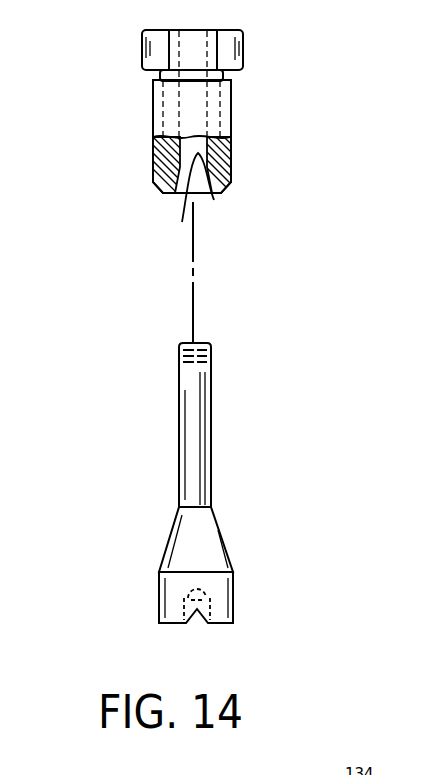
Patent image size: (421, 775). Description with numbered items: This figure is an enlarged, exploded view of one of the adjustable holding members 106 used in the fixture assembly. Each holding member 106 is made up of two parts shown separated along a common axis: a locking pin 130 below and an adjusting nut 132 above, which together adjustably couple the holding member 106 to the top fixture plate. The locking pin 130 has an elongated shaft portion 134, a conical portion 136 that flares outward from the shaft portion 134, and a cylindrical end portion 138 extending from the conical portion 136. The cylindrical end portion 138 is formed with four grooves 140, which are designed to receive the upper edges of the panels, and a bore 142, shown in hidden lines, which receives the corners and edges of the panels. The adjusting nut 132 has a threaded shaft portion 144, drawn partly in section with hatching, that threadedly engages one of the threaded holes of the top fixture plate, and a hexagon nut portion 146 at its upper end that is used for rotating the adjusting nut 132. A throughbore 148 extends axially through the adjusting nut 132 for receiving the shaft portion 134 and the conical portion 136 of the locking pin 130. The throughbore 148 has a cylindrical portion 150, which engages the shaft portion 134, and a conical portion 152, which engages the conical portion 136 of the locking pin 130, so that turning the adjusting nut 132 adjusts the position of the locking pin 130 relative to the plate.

The holding member 106 is at (112, 146).
The locking pin 130 is at (220, 462).
The adjusting nut 132 is at (240, 117).
The shaft portion 134 is at (211, 407).
The conical portion 136 is at (226, 537).
The cylindrical end portion 138 is at (234, 591).
The grooves 140 is at (195, 612).
The bore 142 is at (185, 596).
The threaded shaft portion 144 is at (231, 163).
The hexagon nut portion 146 is at (243, 45).
The throughbore 148 is at (178, 248).
The cylindrical portion 150 is at (200, 55).
The conical portion 152 is at (214, 200).